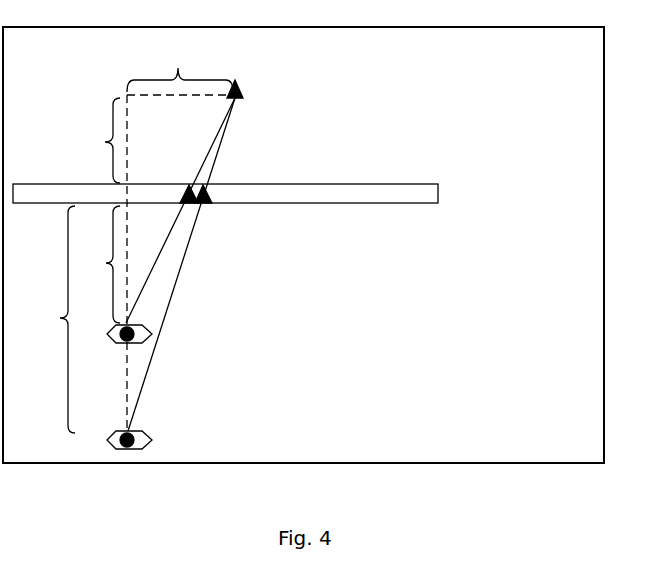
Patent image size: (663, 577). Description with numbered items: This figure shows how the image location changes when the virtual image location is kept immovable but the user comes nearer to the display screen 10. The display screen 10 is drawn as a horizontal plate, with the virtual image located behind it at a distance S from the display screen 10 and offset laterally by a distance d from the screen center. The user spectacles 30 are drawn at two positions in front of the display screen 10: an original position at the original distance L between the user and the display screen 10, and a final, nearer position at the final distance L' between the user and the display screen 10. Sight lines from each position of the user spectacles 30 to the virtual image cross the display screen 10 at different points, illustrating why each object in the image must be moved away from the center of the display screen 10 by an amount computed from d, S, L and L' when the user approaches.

The display screen 10 is at (434, 191).
The user spectacles 30 is at (153, 432).
The distance between the virtual image and screen center d is at (180, 67).
The distance between the virtual image and the display screen S is at (104, 140).
The final distance between the user and the display screen L' is at (98, 264).
The original distance between the user and the display screen L is at (54, 319).